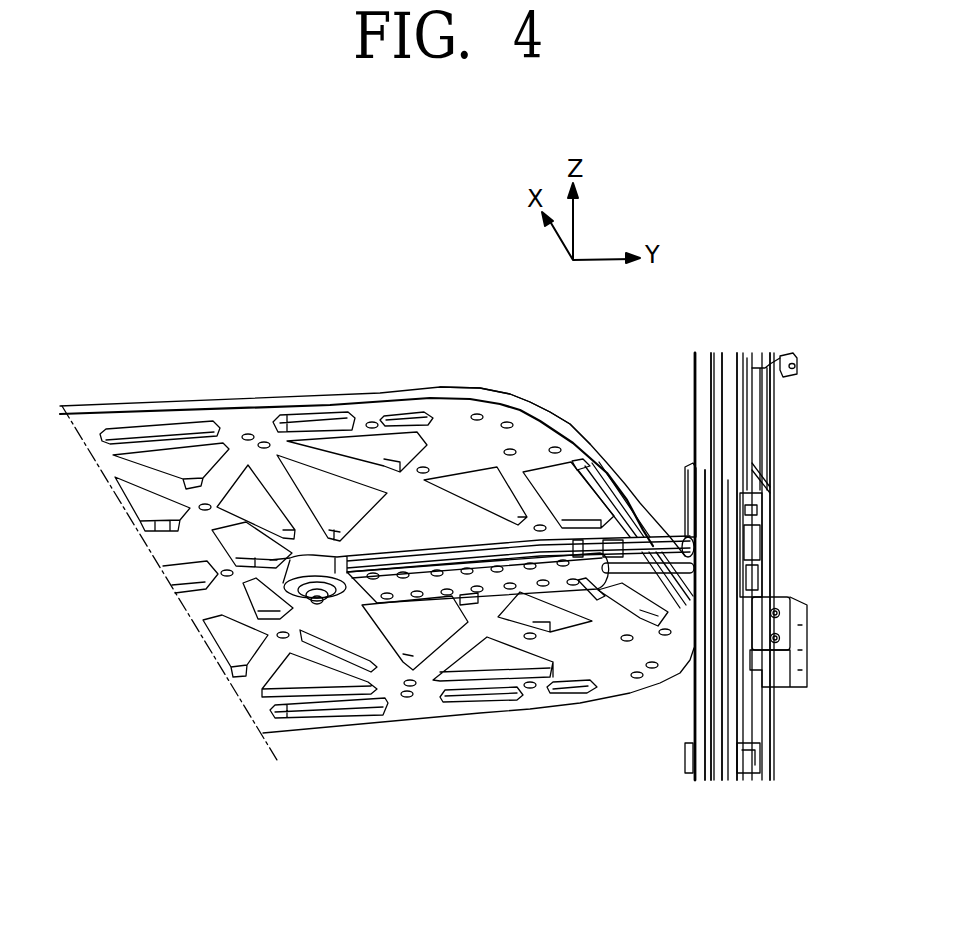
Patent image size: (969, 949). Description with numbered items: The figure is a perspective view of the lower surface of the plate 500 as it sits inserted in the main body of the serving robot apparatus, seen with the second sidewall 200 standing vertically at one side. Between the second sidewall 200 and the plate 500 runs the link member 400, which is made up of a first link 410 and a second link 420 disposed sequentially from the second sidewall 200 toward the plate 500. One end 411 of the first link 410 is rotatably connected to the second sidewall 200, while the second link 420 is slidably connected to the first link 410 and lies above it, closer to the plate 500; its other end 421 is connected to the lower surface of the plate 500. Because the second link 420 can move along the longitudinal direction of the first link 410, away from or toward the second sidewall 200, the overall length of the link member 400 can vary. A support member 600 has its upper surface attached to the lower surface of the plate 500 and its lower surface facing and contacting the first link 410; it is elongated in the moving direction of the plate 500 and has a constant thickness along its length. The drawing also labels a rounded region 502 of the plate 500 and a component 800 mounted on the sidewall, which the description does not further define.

The second sidewall 200 is at (767, 421).
The link member 400 is at (482, 678).
The first link 410 is at (460, 578).
The one end of the first link 411 is at (648, 562).
The second link 420 is at (338, 602).
The other end 421 is at (318, 605).
The plate 500 is at (333, 399).
The rounded corner of plate 502 is at (522, 404).
The support member 600 is at (620, 475).
The drive unit housing 800 is at (813, 557).